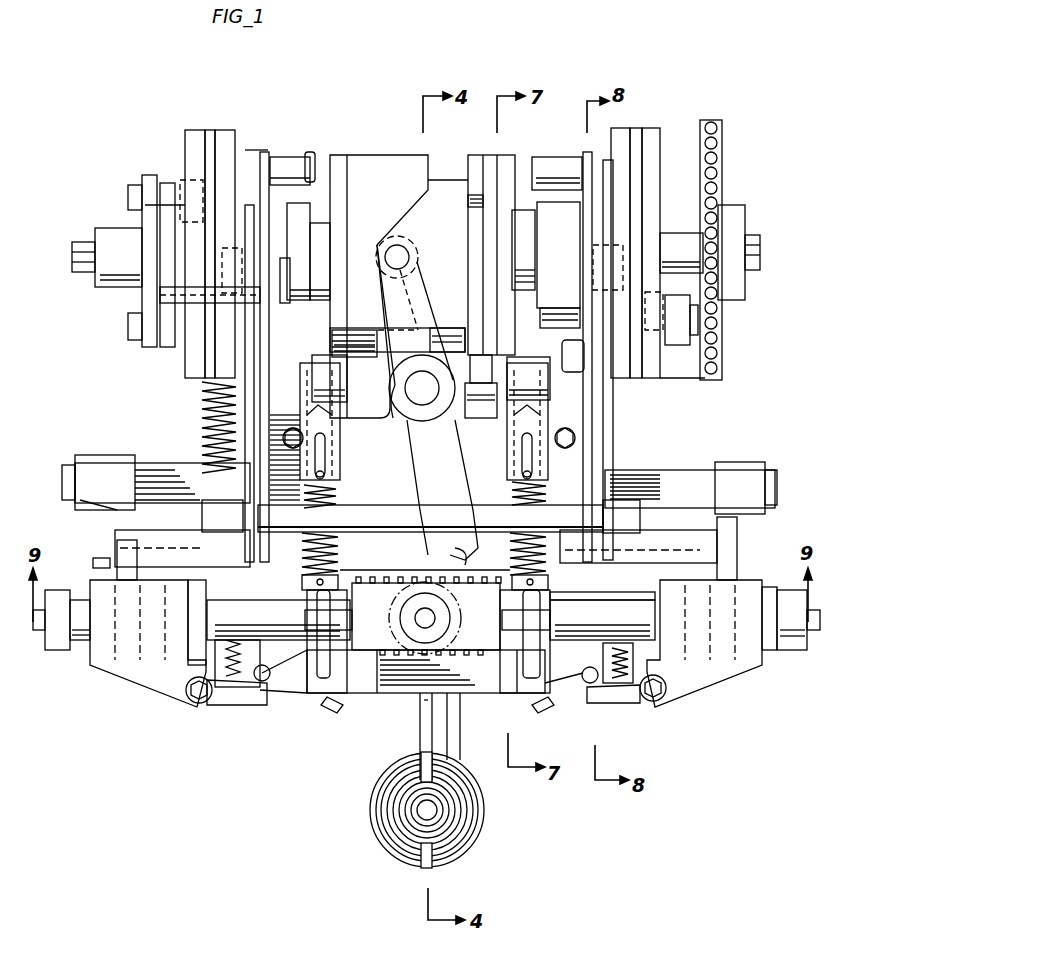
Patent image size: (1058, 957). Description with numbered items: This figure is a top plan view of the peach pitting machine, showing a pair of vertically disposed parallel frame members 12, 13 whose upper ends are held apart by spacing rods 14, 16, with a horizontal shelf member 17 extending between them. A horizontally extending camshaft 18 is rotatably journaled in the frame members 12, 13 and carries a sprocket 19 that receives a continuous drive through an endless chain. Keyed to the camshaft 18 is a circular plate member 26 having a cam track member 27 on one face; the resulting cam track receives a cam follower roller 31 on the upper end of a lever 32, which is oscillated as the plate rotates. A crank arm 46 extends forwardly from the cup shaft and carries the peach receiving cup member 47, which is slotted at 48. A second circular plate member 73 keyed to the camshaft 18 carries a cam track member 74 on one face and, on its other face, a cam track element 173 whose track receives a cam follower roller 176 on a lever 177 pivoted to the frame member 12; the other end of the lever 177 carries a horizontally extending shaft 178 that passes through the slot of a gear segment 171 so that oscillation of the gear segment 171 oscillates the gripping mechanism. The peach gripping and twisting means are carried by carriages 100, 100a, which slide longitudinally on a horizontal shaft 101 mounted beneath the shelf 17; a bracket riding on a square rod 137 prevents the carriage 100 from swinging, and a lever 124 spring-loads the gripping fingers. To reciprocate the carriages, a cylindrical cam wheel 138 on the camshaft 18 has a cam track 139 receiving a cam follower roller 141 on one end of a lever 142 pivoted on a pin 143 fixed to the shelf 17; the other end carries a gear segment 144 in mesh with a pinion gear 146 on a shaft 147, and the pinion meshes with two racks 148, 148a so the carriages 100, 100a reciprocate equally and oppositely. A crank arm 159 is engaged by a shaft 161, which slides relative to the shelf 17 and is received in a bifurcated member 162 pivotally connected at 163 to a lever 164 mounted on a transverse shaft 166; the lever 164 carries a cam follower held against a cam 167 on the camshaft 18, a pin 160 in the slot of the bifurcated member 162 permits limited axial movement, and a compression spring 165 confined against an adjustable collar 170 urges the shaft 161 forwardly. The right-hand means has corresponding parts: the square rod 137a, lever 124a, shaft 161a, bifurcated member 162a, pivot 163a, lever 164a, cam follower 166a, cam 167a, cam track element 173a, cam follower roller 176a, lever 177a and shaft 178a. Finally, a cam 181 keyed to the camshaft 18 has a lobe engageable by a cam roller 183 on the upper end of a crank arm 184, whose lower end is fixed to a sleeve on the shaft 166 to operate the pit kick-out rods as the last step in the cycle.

The frame member 12 is at (265, 158).
The frame member 13 is at (585, 152).
The spacing rod 14 is at (307, 160).
The spacing rod 16 is at (380, 518).
The shelf member 17 is at (497, 465).
The camshaft 18 is at (685, 238).
The sprocket 19 is at (714, 160).
The circular plate member 26 is at (633, 130).
The cam track member 27 is at (650, 130).
The cam follower roller 31 is at (665, 298).
The lever 32 is at (677, 345).
The crank arm 46 is at (460, 746).
The peach receiving cup member 47 is at (462, 850).
The slot 48 is at (427, 868).
The second circular plate member 73 is at (210, 135).
The cam track member 74 is at (192, 132).
The carriage 100 is at (146, 695).
The carriage 100a is at (703, 690).
The horizontal shaft 101 is at (300, 595).
The second lever 124 is at (322, 705).
The second lever 124a is at (550, 700).
The square rod 137 is at (175, 485).
The square rod 137a is at (653, 485).
The cylindrical cam wheel 138 is at (382, 175).
The cam track 139 is at (448, 170).
The cam follower roller 141 is at (408, 252).
The lever 142 is at (425, 295).
The pin 143 is at (405, 386).
The gear segment 144 is at (430, 562).
The pinion gear 146 is at (450, 608).
The shaft 147 is at (417, 615).
The rack 148 is at (395, 672).
The rack 148a is at (556, 590).
The crank arm 159 is at (228, 702).
The pin 160 is at (320, 475).
The shaft 161 is at (320, 695).
The shaft 161a is at (532, 660).
The bifurcated member 162 is at (326, 460).
The bifurcated member 162a is at (527, 478).
The pivotal connection 163 is at (296, 380).
The pivotal connection 163a is at (550, 372).
The lever 164 is at (330, 388).
The lever 164a is at (545, 395).
The compression spring 165 is at (340, 492).
The shaft 166 is at (345, 358).
The cam follower 166a is at (562, 345).
The cam 167 is at (335, 338).
The cam 167a is at (500, 327).
The adjustable collar 170 is at (427, 621).
The gear segment 171 is at (137, 562).
The cam track element 173 is at (225, 138).
The cam track element 173a is at (613, 140).
The cam follower roller 176 is at (232, 258).
The cam follower roller 176a is at (597, 258).
The lever 177 is at (245, 418).
The lever 177a is at (580, 320).
The shaft 178 is at (185, 520).
The shaft 178a is at (650, 540).
The cam 181 is at (485, 203).
The cam roller 183 is at (498, 425).
The crank arm 184 is at (452, 410).